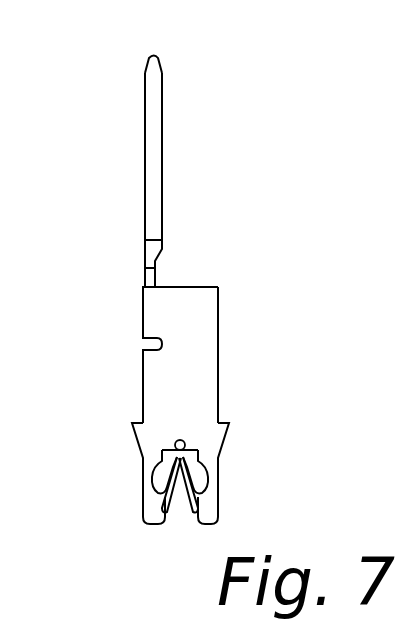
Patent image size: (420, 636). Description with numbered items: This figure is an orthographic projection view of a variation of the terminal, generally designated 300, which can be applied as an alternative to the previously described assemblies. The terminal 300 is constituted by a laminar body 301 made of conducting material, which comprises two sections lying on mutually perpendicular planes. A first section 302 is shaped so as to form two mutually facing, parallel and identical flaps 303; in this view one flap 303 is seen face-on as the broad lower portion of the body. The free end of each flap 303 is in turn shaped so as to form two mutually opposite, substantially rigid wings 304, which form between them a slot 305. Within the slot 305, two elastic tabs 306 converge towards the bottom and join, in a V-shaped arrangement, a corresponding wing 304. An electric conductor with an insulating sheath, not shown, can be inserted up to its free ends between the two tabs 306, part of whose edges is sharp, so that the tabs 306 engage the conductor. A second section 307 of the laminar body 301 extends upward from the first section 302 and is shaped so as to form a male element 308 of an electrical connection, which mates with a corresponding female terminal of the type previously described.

The terminal 300 is at (248, 286).
The laminar body 301 is at (141, 270).
The first section 302 is at (139, 396).
The flap 303 is at (218, 343).
The wing 304 is at (143, 468).
The slot 305 is at (174, 498).
The elastic tab 306 is at (170, 488).
The second section 307 is at (163, 113).
The male element 308 is at (147, 81).